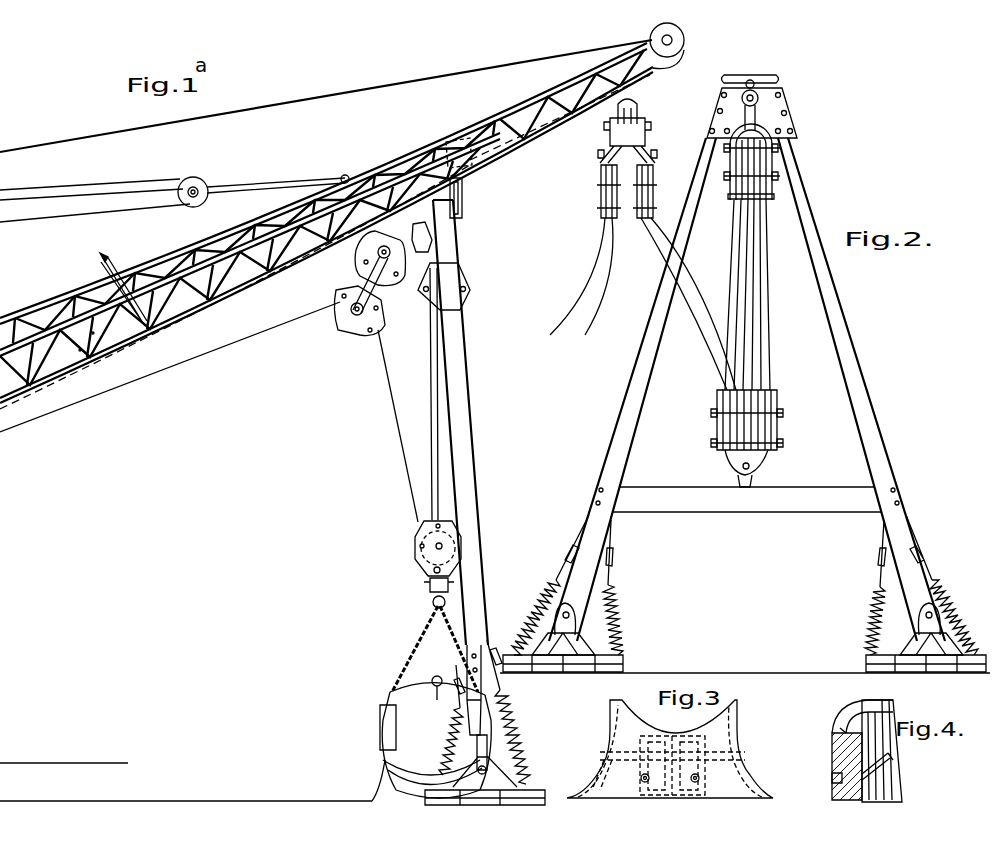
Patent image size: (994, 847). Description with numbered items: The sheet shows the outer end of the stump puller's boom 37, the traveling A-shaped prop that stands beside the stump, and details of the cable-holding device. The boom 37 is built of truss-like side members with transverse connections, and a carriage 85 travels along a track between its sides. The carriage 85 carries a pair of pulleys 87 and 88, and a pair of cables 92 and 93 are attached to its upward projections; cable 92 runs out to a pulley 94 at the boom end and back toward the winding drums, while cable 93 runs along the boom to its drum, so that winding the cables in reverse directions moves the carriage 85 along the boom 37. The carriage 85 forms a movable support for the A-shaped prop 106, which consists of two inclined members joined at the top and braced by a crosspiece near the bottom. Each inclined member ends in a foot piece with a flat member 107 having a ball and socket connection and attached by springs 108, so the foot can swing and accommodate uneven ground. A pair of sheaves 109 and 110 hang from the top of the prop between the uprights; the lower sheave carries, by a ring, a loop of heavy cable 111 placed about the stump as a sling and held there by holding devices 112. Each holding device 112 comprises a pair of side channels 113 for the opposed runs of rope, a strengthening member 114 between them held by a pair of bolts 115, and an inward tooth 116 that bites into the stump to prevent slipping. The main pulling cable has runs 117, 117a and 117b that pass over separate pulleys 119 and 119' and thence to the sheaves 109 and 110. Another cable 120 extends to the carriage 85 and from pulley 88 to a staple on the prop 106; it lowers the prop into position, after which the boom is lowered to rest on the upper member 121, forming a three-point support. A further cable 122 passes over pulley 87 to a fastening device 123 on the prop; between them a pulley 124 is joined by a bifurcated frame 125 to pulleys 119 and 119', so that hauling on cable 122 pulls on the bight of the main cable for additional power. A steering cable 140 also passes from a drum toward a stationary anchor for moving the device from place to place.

In FIG. 1a, the boom 37 is at (207, 297).
In FIG. 1a, the carriage 85 is at (470, 170).
In FIG. 1a, the pulley 87 is at (364, 168).
In FIG. 1a, the pulley 88 is at (462, 132).
In FIG. 1a, the cable 92 is at (93, 333).
In FIG. 1a, the cable 93 is at (80, 350).
In FIG. 1a, the pulley 94 is at (684, 44).
In FIG. 1a, the A-shaped prop 106 is at (462, 408).
In FIG. 2, the A-shaped prop 106 is at (845, 330).
In FIG. 1a, the flat member 107 is at (532, 792).
In FIG. 2, the flat member 107 is at (618, 664).
In FIG. 1a, the springs 108 is at (515, 748).
In FIG. 2, the springs 108 is at (618, 610).
In FIG. 1a, the sheave 109 is at (468, 291).
In FIG. 2, the sheave 109 is at (758, 200).
In FIG. 1a, the sheave 110 is at (414, 562).
In FIG. 2, the sheave 110 is at (775, 410).
In FIG. 1a, the loop of heavy cable 111 is at (424, 646).
In FIG. 1a, the holding devices 112 is at (382, 730).
In FIG. 3, the holding devices 112 is at (675, 741).
In FIG. 4, the holding devices 112 is at (840, 728).
In FIG. 3, the side channels 113 is at (626, 713).
In FIG. 4, the side channels 113 is at (869, 710).
In FIG. 3, the strengthening member 114 is at (594, 783).
In FIG. 4, the strengthening member 114 is at (840, 752).
In FIG. 3, the bolts 115 is at (700, 780).
In FIG. 4, the bolts 115 is at (832, 778).
In FIG. 3, the biting member or tooth 116 is at (738, 747).
In FIG. 4, the biting member or tooth 116 is at (893, 757).
In FIG. 1a, the main cable run 117 is at (43, 420).
In FIG. 2, the main cable run 117a is at (706, 332).
In FIG. 2, the main cable run 117b is at (603, 322).
In FIG. 2, the pulley 119 is at (590, 202).
In FIG. 1a, the pulley 119' is at (341, 316).
In FIG. 2, the pulley 119' is at (668, 191).
In FIG. 1a, the cable 120 is at (468, 185).
In FIG. 2, the upper member 121 is at (772, 72).
In FIG. 1a, the cable 122 is at (138, 284).
In FIG. 1a, the fastening device 123 is at (418, 222).
In FIG. 1a, the pulley 124 is at (357, 260).
In FIG. 2, the pulley 124 is at (635, 116).
In FIG. 1a, the bifurcated frame 125 is at (372, 285).
In FIG. 2, the bifurcated frame 125 is at (647, 146).
In FIG. 1a, the cable 140 is at (70, 763).